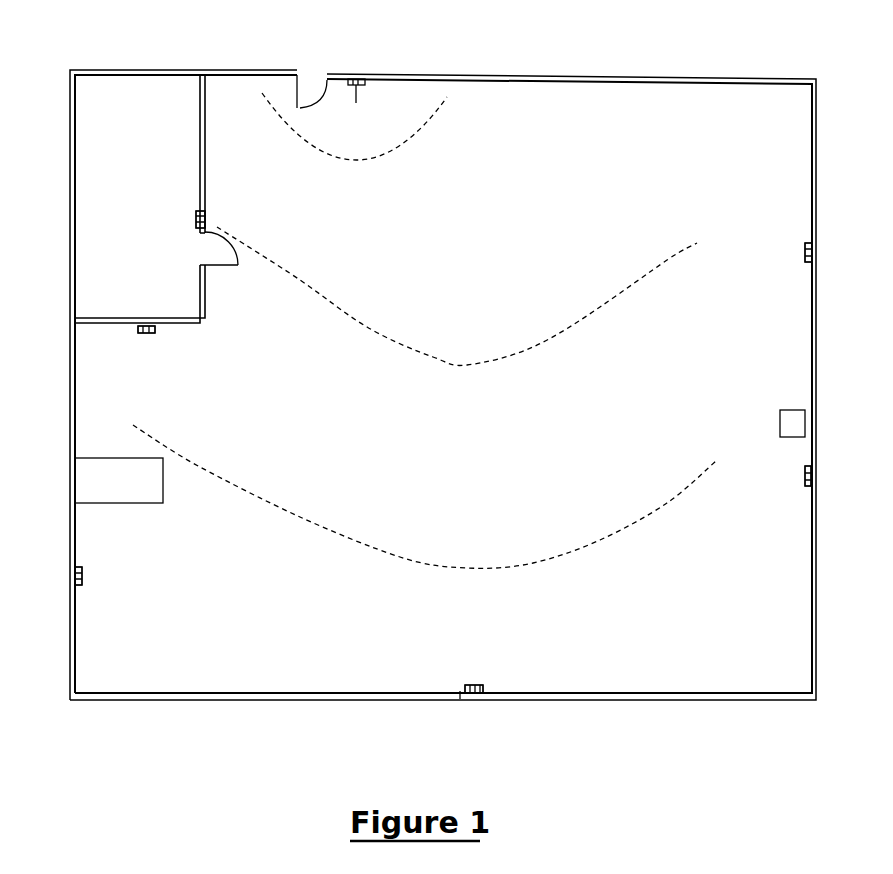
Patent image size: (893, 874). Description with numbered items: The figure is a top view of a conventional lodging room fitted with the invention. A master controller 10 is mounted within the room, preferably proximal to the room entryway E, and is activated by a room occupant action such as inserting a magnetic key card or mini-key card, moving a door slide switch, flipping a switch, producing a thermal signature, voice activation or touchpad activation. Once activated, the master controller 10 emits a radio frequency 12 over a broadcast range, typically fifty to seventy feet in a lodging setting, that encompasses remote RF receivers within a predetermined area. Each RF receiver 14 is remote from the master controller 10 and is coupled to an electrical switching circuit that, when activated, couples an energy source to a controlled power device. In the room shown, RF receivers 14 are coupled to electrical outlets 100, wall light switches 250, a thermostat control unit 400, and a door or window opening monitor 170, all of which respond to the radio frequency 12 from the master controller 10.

The RF receiver 14 is at (195, 215).
The master controller 10 is at (362, 88).
The radio frequency 12 is at (517, 353).
The wall light switch 250 is at (206, 213).
The thermostat control unit 400 is at (145, 336).
The electrical outlet 100 is at (85, 572).
The door or window opening monitor 170 is at (470, 682).
The room entryway E is at (310, 78).